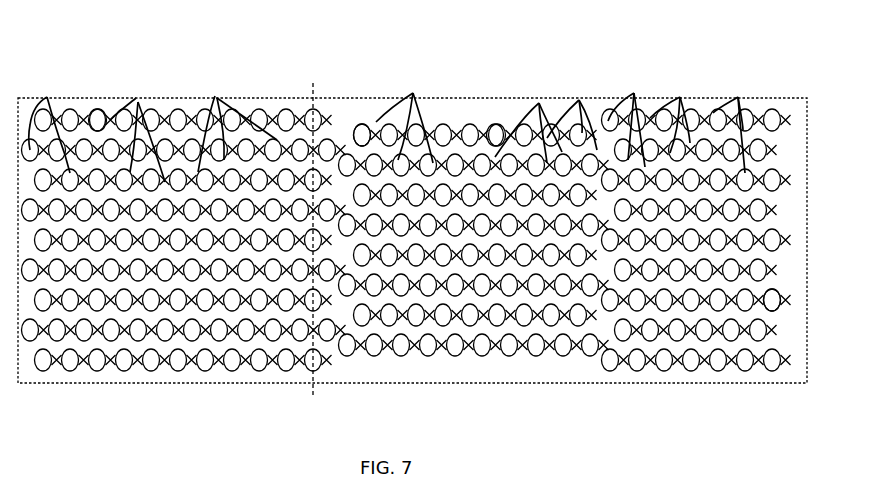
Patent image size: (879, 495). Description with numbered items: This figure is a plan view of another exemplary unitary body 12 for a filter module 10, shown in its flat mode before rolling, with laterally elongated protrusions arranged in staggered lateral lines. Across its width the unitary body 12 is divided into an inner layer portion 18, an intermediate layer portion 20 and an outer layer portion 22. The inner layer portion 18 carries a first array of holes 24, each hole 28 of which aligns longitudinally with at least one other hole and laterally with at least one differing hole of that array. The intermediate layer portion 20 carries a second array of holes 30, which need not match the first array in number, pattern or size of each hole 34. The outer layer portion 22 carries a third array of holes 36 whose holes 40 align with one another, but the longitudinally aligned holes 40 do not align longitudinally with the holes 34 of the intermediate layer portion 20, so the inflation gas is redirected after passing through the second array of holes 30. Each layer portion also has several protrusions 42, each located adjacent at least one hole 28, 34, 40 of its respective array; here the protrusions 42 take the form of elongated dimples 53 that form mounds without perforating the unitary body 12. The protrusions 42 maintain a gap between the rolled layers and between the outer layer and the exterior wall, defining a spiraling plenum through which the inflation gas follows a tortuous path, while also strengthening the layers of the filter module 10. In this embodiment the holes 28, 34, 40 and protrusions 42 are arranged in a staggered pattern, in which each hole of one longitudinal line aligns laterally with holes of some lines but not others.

The filter module 10 is at (250, 76).
The unitary body 12 is at (498, 111).
The inner layer portion 18 is at (602, 400).
The intermediate layer portion 20 is at (597, 398).
The outer layer portion 22 is at (323, 400).
The first array of holes 24 is at (776, 285).
The hole 28 is at (680, 97).
The second array of holes 30 is at (375, 131).
The hole 34 is at (539, 103).
The third array of holes 36 is at (84, 113).
The hole 40 is at (138, 102).
The protrusion 42 is at (47, 97).
The elongated dimple 53 is at (217, 98).